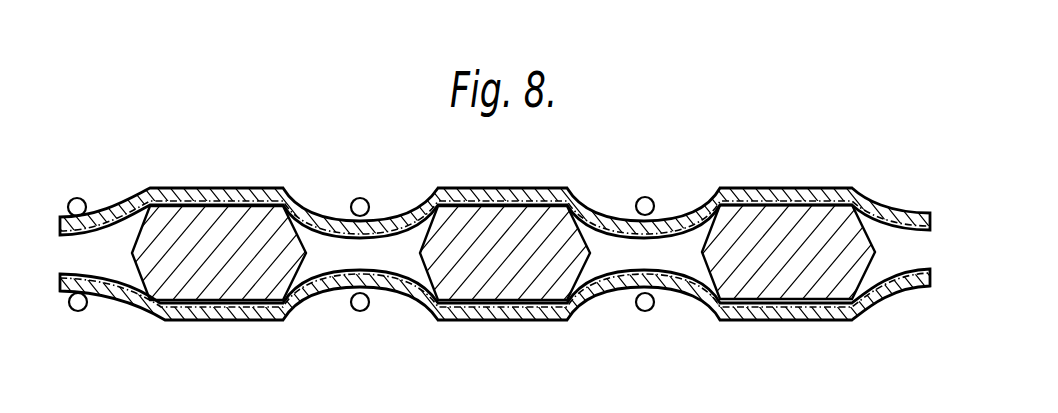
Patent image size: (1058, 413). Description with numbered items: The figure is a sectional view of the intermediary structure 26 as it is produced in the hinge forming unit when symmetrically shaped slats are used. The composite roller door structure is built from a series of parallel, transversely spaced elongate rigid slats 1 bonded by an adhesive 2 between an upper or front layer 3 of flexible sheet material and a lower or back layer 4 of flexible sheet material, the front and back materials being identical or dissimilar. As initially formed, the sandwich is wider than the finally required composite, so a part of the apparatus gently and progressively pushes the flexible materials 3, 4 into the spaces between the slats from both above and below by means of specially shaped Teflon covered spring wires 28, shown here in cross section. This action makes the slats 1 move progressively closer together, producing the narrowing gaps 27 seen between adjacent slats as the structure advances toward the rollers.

The slats 1 is at (161, 281).
The adhesive 2 is at (409, 293).
The upper or front layer of flexible sheet material 3 is at (209, 198).
The lower or back layer of flexible sheet material 4 is at (503, 312).
The intermediary structure 26 is at (763, 176).
The narrowing gaps 27 is at (657, 248).
The spring wires 28 is at (363, 198).